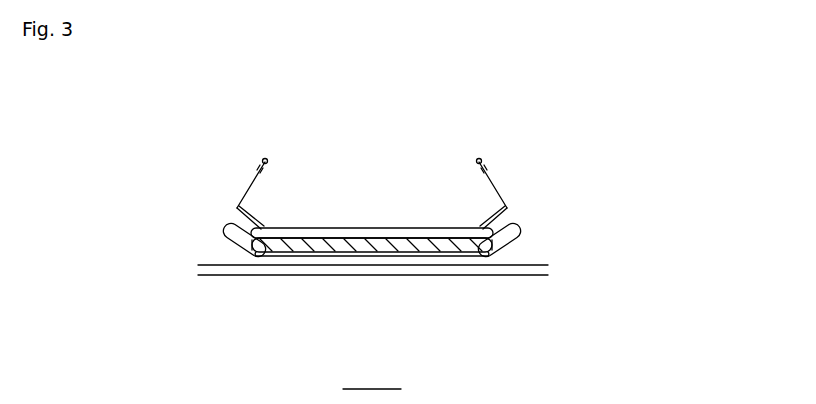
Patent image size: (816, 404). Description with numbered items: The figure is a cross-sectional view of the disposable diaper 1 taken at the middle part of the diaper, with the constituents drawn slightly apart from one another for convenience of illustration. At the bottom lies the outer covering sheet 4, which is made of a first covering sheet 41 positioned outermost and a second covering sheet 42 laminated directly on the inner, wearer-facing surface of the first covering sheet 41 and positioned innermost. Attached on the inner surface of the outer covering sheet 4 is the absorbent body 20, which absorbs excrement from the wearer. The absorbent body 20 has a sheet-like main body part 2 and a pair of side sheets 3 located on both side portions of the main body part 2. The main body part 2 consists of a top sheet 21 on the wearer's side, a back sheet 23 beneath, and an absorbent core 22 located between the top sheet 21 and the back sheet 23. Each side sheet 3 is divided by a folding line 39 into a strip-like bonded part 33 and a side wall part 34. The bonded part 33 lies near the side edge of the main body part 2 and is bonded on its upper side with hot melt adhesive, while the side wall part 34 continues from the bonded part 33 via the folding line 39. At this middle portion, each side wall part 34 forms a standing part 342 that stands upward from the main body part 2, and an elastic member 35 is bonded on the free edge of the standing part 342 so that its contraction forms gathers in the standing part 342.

The disposable diaper 1 is at (195, 88).
The main body part 2 is at (348, 327).
The absorbent body 20 is at (300, 363).
The top sheet 21 is at (325, 229).
The absorbent core 22 is at (364, 243).
The back sheet 23 is at (398, 258).
The side sheet 3 is at (137, 167).
The bonded part 33 is at (273, 257).
The side wall part 34 is at (192, 163).
The standing part 342 is at (242, 193).
The elastic member 35 is at (262, 160).
The folding line 39 is at (230, 213).
The outer covering sheet 4 is at (228, 332).
The first covering sheet 41 is at (240, 277).
The second covering sheet 42 is at (217, 277).